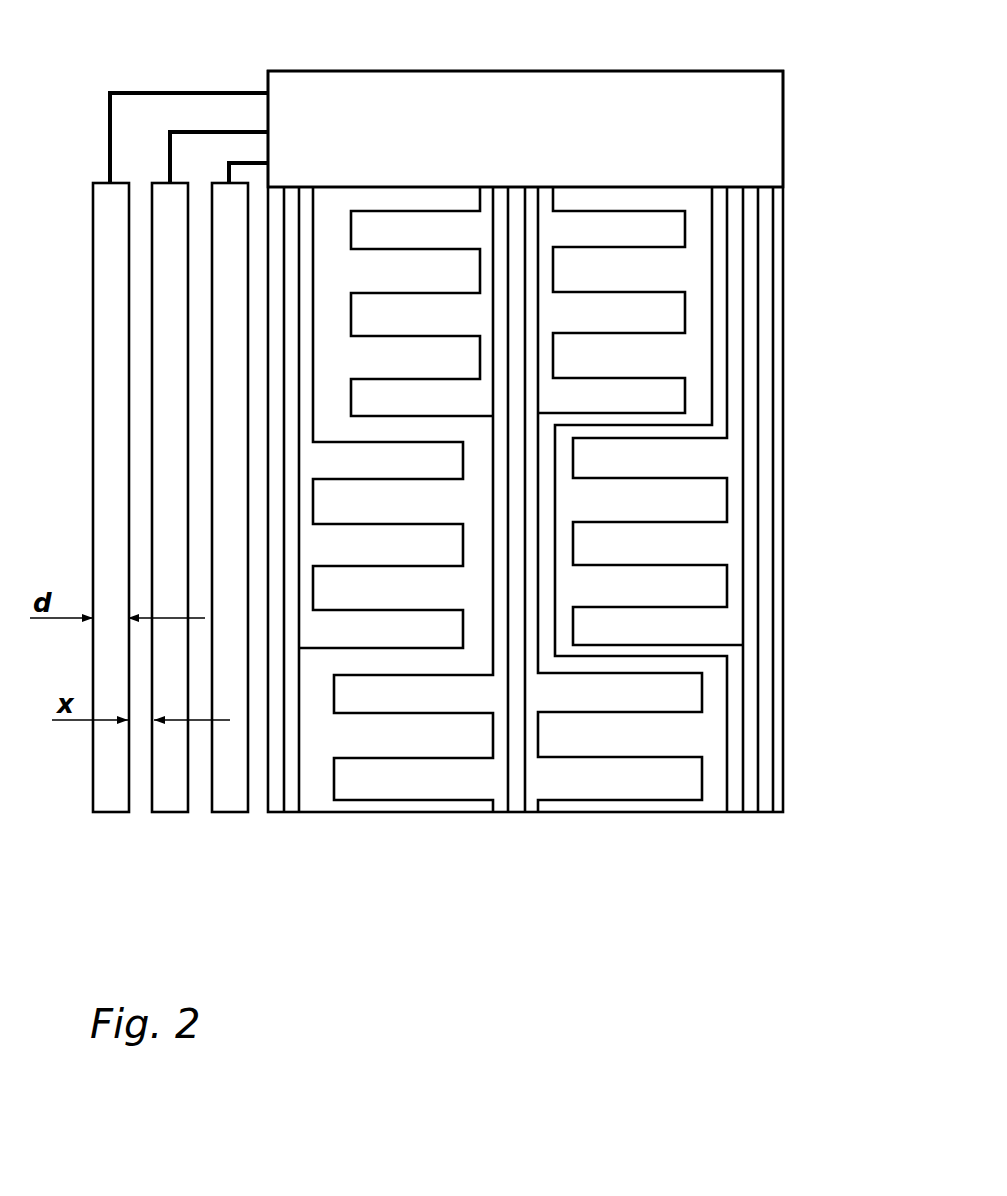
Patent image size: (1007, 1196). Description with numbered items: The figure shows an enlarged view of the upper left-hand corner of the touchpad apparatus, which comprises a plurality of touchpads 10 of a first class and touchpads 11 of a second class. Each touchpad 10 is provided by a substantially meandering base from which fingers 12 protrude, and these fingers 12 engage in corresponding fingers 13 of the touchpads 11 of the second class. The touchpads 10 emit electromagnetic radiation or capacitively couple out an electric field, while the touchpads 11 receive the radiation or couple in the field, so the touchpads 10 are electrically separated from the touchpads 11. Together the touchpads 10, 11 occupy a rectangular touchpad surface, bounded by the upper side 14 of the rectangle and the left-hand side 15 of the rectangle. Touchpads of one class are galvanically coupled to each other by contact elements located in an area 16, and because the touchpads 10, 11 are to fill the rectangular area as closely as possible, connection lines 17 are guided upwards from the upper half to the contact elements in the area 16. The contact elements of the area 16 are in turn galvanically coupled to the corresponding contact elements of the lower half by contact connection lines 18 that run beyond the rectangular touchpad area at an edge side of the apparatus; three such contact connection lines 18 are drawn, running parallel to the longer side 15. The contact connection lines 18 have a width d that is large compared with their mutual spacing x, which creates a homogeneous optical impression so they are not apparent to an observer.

The touchpad of a first class 10 is at (702, 415).
The touchpad of a second class 11 is at (693, 415).
The finger 12 is at (612, 270).
The finger 13 is at (569, 225).
The upper side of the rectangle 14 is at (358, 187).
The left-hand side of the rectangle 15 is at (266, 800).
The area 16 is at (428, 87).
The connection line 17 is at (511, 193).
The contact connection line 18 is at (110, 802).